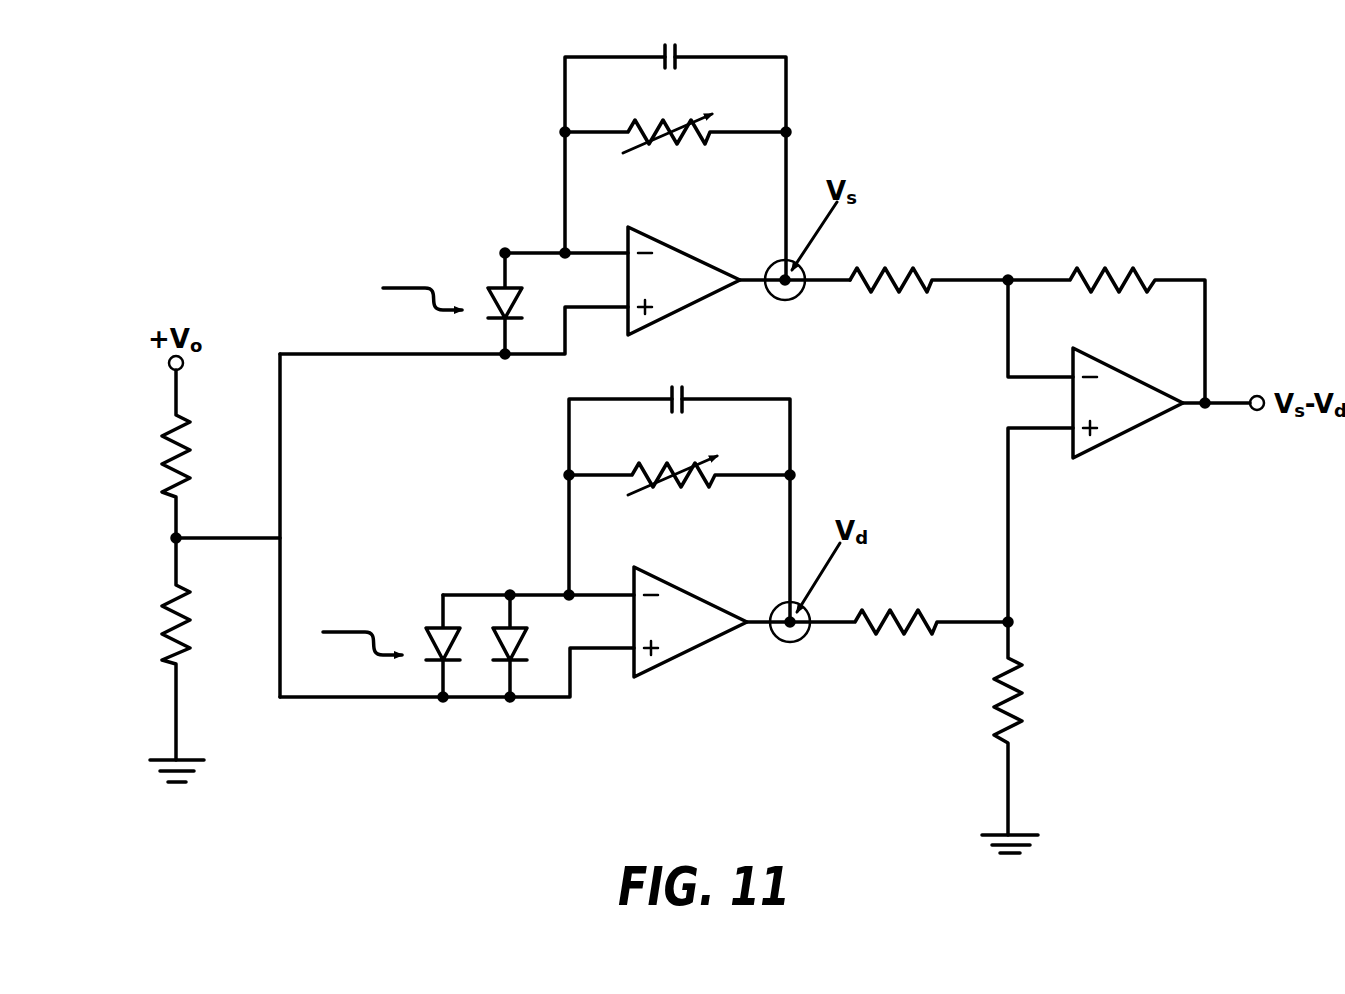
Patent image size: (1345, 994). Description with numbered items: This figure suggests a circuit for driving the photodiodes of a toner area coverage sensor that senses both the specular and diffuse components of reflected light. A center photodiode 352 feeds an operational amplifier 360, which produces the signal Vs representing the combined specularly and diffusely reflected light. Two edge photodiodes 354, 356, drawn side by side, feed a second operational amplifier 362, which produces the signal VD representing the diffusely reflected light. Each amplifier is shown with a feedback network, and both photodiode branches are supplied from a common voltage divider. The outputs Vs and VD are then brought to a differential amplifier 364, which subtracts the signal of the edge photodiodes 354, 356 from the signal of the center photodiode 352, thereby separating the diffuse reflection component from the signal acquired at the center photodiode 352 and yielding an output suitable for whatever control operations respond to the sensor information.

The center photodiode 352 is at (492, 298).
The edge photodiode 354 is at (427, 630).
The edge photodiode 356 is at (527, 630).
The operational amplifier 360 is at (683, 310).
The operational amplifier 362 is at (688, 650).
The differential amplifier 364 is at (1130, 430).